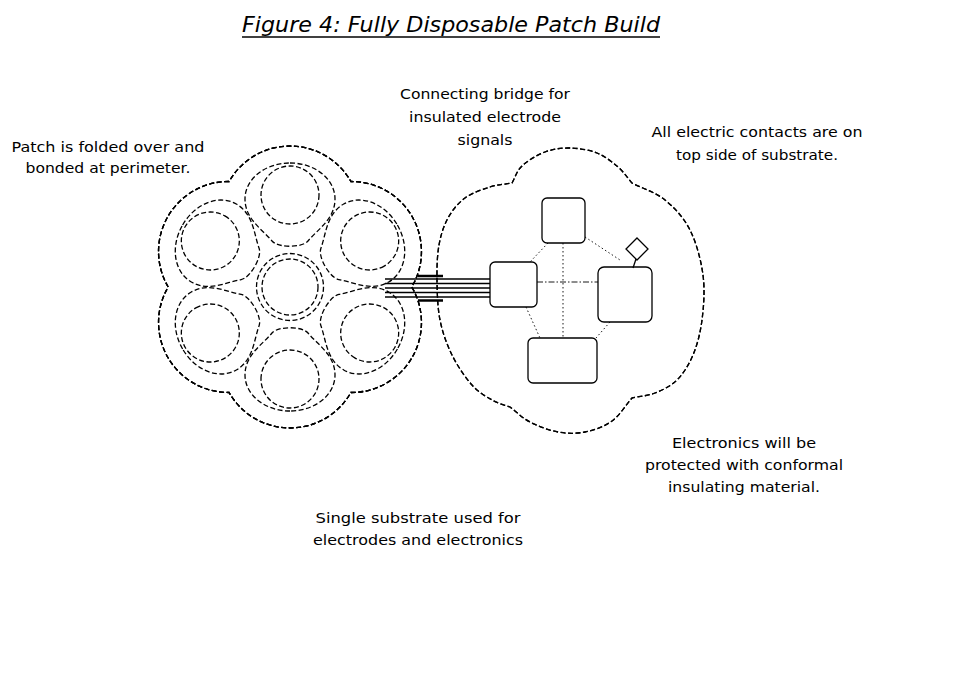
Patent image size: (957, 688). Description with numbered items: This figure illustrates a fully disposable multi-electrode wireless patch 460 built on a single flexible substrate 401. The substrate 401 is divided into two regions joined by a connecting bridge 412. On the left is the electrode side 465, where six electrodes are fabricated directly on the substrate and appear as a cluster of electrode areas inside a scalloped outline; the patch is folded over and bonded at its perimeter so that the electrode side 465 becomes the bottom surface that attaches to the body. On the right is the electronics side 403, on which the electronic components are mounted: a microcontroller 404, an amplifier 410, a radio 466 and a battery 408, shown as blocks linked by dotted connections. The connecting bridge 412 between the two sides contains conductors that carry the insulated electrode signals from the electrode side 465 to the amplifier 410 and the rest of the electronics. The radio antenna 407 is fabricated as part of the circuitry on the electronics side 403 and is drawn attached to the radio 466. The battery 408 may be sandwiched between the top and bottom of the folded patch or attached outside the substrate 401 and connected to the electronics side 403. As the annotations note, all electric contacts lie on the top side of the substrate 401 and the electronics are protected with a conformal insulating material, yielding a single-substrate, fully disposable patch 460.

The fully disposable wireless patch 460 is at (458, 670).
The single flexible substrate 401 is at (517, 400).
The electronics side 403 is at (587, 290).
The electronic component 404 is at (573, 197).
The radio 466 is at (652, 299).
The radio antenna 407 is at (647, 247).
The battery 408 is at (572, 383).
The electronic component 410 is at (503, 261).
The connecting bridge 412 is at (433, 274).
The electrode side 465 is at (222, 410).